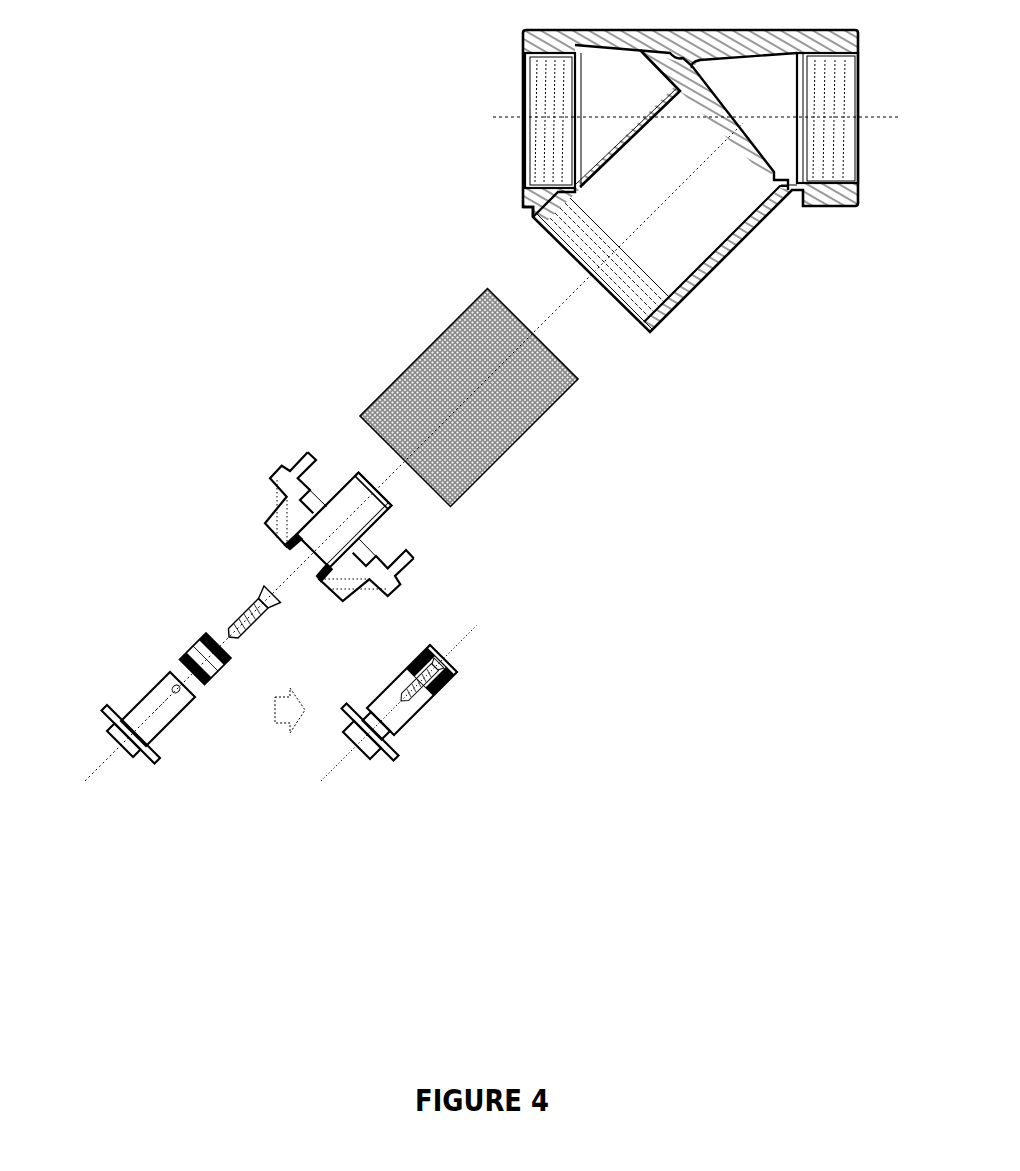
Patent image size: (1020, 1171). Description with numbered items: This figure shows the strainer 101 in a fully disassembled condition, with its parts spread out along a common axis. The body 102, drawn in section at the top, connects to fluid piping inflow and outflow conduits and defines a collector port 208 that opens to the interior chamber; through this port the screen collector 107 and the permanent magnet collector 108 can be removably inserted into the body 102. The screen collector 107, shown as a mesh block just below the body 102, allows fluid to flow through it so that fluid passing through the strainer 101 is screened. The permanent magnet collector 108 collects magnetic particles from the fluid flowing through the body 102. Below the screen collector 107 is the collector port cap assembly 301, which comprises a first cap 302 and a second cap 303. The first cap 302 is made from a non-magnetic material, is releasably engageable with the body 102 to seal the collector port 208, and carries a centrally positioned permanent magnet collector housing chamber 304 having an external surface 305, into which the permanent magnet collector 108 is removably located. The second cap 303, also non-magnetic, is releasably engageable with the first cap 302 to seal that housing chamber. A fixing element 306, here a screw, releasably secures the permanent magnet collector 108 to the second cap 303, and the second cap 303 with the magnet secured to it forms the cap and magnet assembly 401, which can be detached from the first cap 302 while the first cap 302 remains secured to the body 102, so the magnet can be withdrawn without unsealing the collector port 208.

The strainer 101 is at (652, 660).
The body 102 is at (713, 247).
The screen collector 107 is at (548, 407).
The permanent magnet collector 108 is at (195, 642).
The collector port 208 is at (503, 217).
The collector port cap assembly 301 is at (298, 412).
The first cap 302 is at (390, 578).
The second cap 303 is at (140, 752).
The permanent magnet collector housing chamber 304 is at (366, 524).
The external surface 305 is at (401, 501).
The fixing element 306 is at (253, 626).
The cap and magnet assembly 401 is at (363, 795).